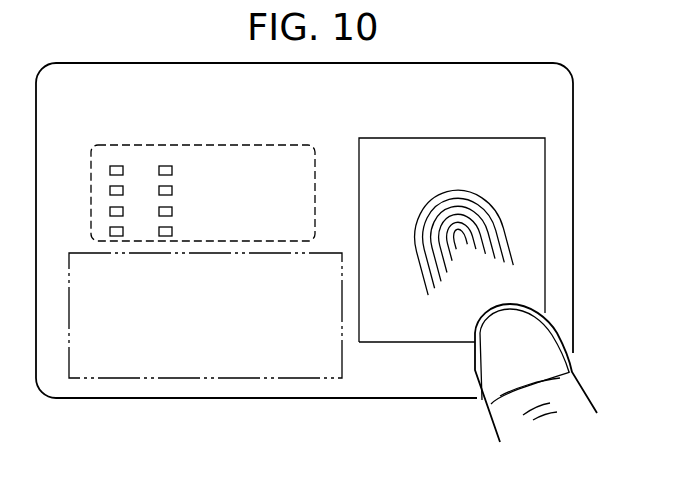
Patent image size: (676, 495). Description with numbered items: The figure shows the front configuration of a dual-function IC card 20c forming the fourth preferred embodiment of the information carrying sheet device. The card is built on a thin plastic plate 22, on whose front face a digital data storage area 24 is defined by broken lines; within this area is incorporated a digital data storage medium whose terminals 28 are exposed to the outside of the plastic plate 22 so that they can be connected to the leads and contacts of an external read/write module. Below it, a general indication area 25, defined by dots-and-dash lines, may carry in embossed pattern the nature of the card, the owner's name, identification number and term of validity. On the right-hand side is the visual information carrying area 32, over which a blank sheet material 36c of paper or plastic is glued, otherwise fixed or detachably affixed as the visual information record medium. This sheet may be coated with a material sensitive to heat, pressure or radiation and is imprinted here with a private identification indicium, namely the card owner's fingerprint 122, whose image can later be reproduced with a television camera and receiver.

The dual-function IC card 20c is at (573, 97).
The plastic plate 22 is at (296, 98).
The digital data storage area 24 is at (208, 145).
The terminals 28 is at (159, 168).
The general indication area 25 is at (217, 324).
The visual information carrying area 32 is at (411, 128).
The fingerprint 122 is at (496, 207).
The blank sheet material 36c is at (414, 342).